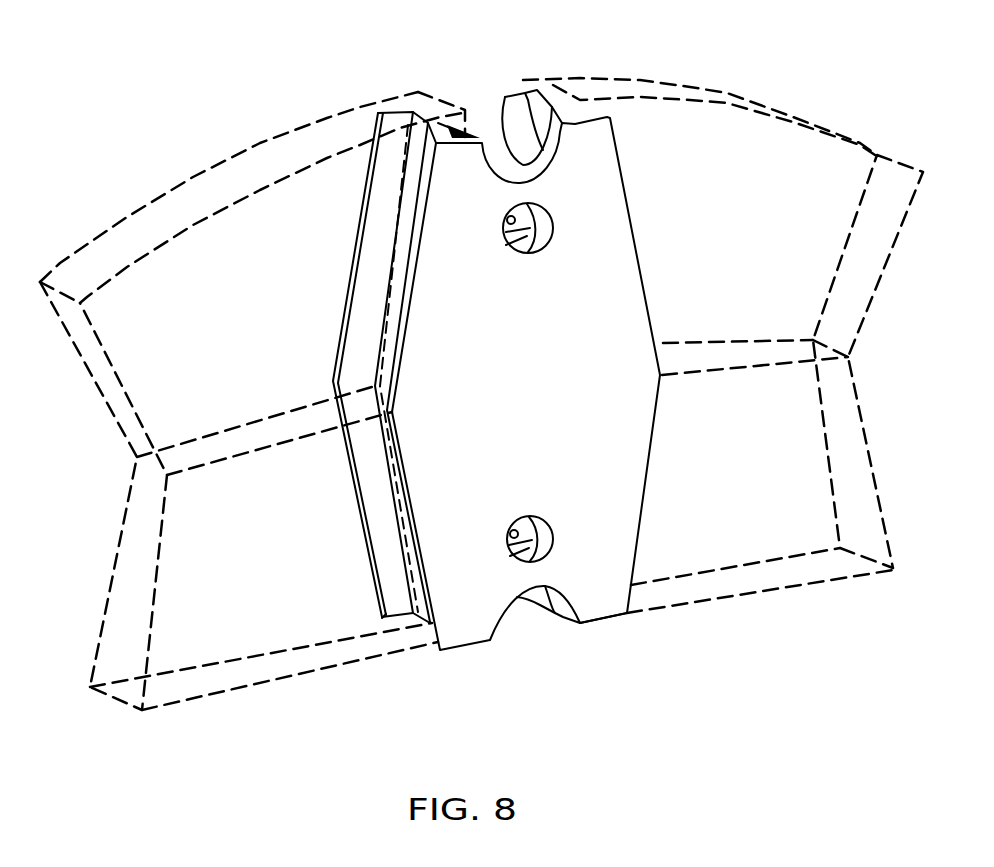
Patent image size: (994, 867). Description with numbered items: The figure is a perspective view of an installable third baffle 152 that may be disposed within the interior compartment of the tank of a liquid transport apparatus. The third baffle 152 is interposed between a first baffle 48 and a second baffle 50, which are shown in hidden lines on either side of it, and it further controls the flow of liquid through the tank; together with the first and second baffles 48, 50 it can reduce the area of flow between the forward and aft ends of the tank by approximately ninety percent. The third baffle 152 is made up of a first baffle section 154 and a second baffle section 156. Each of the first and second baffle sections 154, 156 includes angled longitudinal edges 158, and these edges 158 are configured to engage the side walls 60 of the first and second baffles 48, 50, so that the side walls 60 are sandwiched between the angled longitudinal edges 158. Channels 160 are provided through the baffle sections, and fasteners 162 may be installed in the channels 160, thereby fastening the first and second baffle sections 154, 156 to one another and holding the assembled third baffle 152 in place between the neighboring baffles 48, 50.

The first baffle 48 is at (265, 683).
The second baffle 50 is at (735, 598).
The side walls 60 is at (435, 100).
The third baffle 152 is at (472, 639).
The first baffle section 154 is at (376, 628).
The second baffle section 156 is at (613, 613).
The angled longitudinal edges 158 is at (558, 107).
The channels 160 is at (549, 237).
The fasteners 162 is at (541, 250).